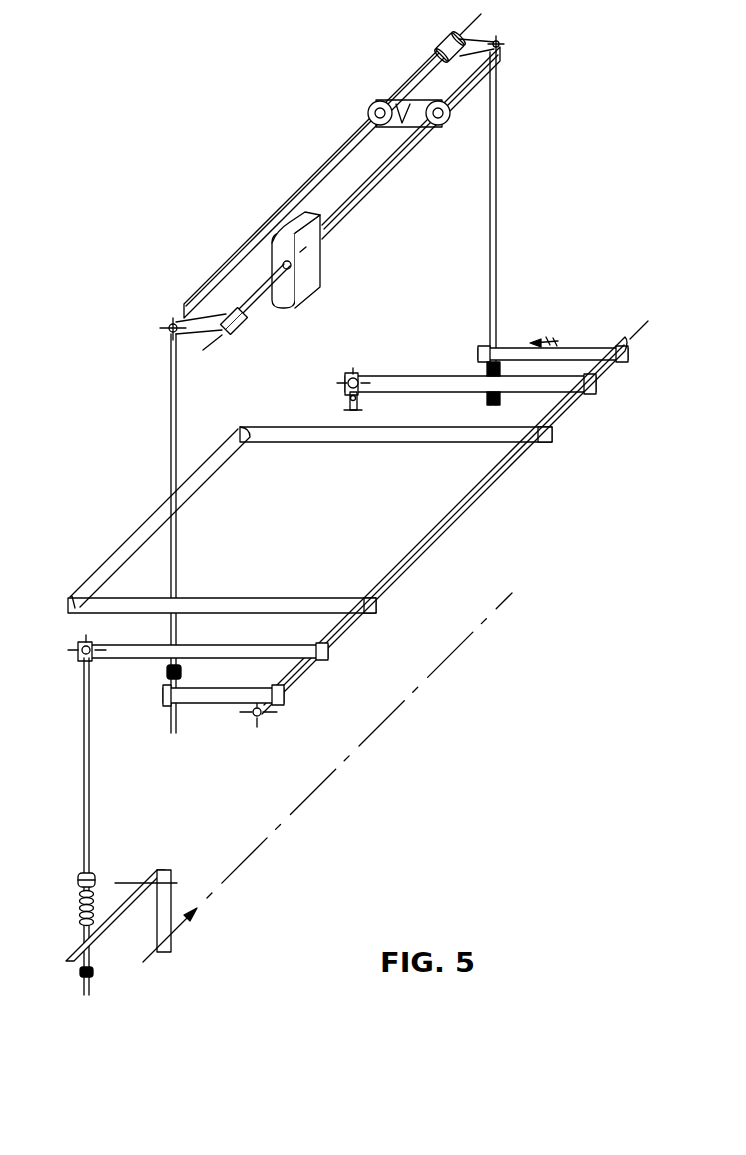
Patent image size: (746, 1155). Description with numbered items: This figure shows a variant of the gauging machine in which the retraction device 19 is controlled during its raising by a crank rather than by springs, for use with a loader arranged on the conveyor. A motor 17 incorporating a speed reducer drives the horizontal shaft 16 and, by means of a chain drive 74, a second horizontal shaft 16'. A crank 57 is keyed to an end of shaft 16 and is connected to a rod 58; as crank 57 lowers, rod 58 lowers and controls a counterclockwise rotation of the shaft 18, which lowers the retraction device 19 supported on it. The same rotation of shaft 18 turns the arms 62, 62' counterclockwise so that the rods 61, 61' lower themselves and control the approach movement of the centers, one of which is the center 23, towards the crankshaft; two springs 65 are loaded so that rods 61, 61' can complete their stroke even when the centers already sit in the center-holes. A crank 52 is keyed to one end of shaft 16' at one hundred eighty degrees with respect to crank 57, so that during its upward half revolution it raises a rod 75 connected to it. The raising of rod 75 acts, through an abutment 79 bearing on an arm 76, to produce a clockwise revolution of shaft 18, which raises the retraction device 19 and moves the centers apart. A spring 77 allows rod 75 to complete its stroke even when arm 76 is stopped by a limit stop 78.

The second horizontal shaft 16' is at (332, 166).
The horizontal shaft 16 is at (411, 143).
The motor 17 is at (314, 264).
The chain drive 74 is at (379, 100).
The crank 52 is at (450, 38).
The rod 75 is at (496, 215).
The crank 57 is at (243, 332).
The rod 58 is at (178, 415).
The arm 76 is at (591, 348).
The limit stop 78 is at (553, 341).
The arm 62 is at (466, 371).
The rod 61 is at (370, 407).
The spring 77 is at (487, 370).
The abutment 79 is at (490, 402).
The retraction device 19 is at (244, 459).
The shaft 18 is at (483, 490).
The arm 62' is at (198, 660).
The rod 61' is at (108, 826).
The spring 65 is at (80, 905).
The center 23 is at (190, 928).